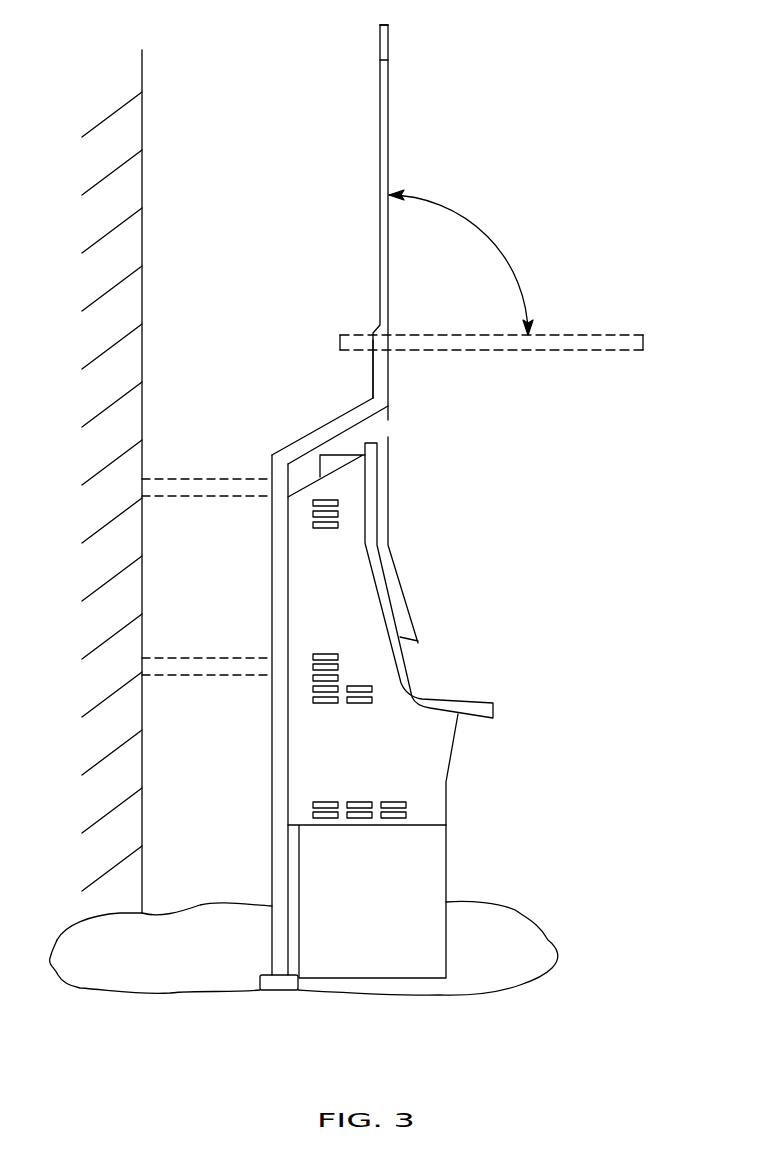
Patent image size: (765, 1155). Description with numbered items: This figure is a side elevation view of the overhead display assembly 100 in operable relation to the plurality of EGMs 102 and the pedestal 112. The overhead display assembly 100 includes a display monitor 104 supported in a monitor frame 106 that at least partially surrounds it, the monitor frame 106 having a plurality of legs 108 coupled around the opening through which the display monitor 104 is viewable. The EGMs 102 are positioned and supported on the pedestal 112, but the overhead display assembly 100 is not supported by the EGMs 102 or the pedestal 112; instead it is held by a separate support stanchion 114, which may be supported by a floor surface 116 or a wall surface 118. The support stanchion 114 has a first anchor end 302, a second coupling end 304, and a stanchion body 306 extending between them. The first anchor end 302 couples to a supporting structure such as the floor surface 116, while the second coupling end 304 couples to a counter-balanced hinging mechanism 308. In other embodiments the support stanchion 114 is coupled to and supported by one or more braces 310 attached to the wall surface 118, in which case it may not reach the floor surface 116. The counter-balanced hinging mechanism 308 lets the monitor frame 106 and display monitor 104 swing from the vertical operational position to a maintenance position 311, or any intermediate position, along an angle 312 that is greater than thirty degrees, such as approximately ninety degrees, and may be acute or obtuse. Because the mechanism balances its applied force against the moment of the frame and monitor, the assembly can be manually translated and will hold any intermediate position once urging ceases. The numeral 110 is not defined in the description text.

The overhead display assembly 100 is at (335, 115).
The EGMs 102 is at (400, 578).
The display monitor 104 is at (380, 213).
The monitor frame 106 is at (389, 25).
The legs 108 is at (380, 60).
The direction 110 is at (405, 288).
The pedestal 112 is at (390, 908).
The support stanchion 114 is at (323, 657).
The floor surface 116 is at (165, 962).
The wall surface 118 is at (143, 420).
The first anchor end 302 is at (262, 975).
The second coupling end 304 is at (370, 395).
The stanchion body 306 is at (272, 568).
The counter-balanced hinging mechanism 308 is at (374, 371).
The braces 310 is at (216, 497).
The maintenance position 311 is at (572, 323).
The angle 312 is at (490, 237).